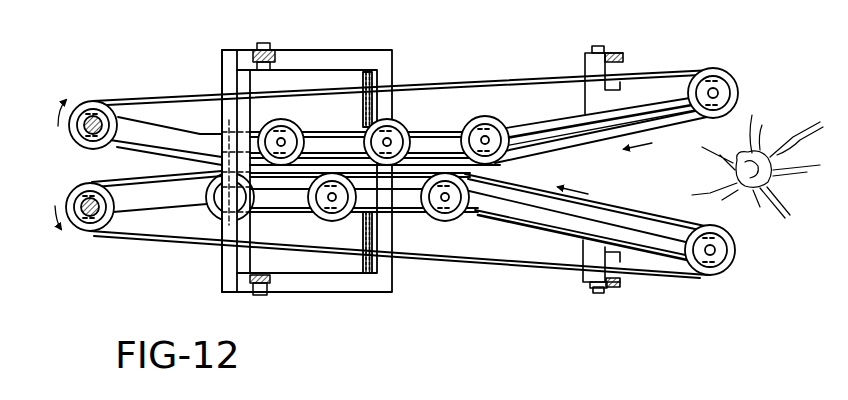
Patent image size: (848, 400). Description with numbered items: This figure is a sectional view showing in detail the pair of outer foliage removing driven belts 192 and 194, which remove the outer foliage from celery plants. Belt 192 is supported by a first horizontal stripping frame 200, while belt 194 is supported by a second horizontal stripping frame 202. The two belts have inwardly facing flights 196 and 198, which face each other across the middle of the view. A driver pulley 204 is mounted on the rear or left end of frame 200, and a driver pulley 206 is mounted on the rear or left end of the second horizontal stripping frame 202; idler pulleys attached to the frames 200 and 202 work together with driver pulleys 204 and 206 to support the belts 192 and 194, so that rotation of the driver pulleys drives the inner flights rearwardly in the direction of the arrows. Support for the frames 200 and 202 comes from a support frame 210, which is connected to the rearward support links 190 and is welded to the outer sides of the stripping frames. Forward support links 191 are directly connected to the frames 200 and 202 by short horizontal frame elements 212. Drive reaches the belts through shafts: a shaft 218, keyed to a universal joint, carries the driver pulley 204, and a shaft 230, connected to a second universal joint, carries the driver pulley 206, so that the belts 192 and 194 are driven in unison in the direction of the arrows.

The support link 190 is at (290, 172).
The forward support link 191 is at (633, 301).
The outer foliage removing driven belt 192 is at (403, 91).
The outer foliage removing driven belt 194 is at (399, 238).
The inwardly facing flight 196 is at (600, 144).
The inwardly facing flight 198 is at (585, 202).
The first horizontal stripping frame 200 is at (405, 113).
The second horizontal stripping frame 202 is at (402, 225).
The driver pulley 204 is at (97, 111).
The driver pulley 206 is at (84, 230).
The support frame 210 is at (312, 189).
The short horizontal frame element 212 is at (635, 171).
The shaft 218 is at (68, 145).
The shaft 230 is at (54, 197).